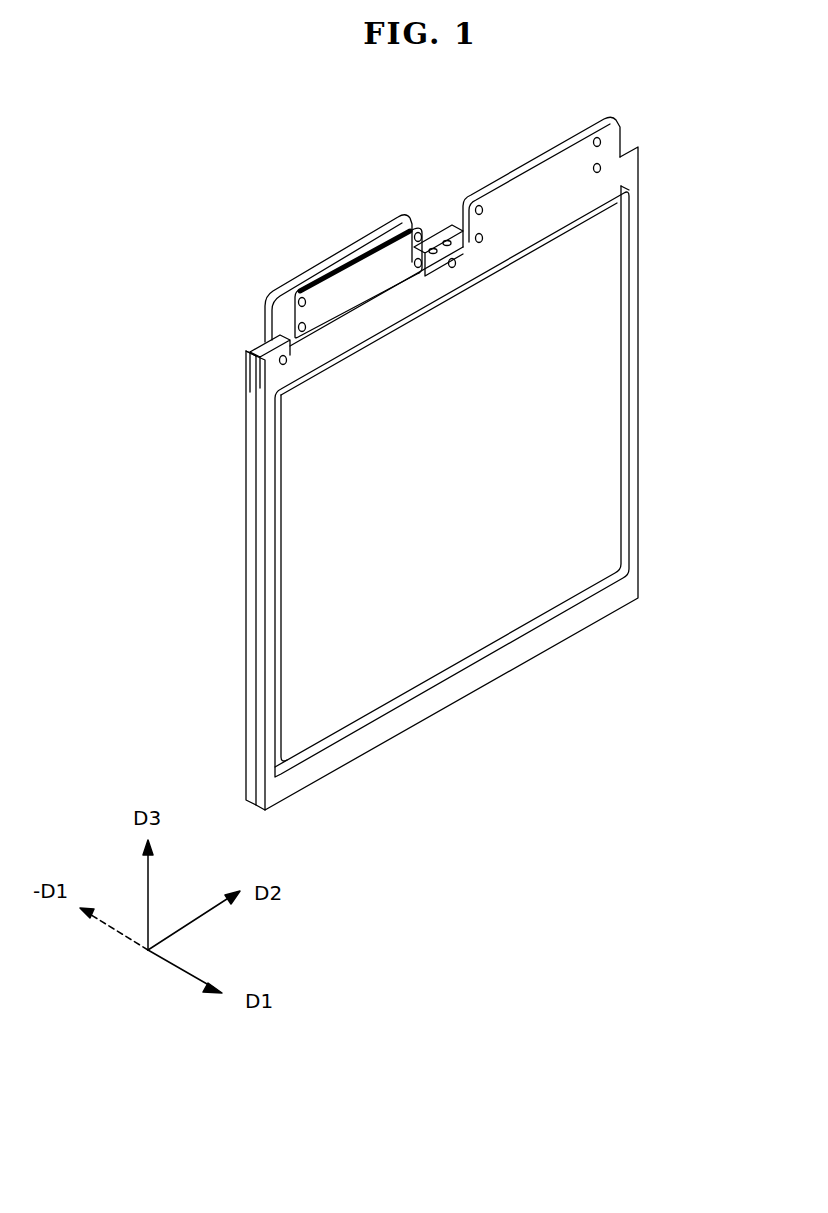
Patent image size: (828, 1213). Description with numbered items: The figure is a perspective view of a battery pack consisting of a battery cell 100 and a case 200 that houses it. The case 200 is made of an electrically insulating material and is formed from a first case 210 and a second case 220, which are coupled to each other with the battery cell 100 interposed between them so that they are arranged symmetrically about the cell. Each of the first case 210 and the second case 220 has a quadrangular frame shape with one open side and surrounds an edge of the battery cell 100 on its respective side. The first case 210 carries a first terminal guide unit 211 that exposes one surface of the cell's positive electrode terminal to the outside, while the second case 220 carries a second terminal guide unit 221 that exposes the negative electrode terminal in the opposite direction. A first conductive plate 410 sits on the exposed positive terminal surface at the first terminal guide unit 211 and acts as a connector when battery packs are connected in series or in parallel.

The battery cell 100 is at (610, 382).
The case 200 is at (166, 497).
The first case 210 is at (251, 508).
The first terminal guide unit 211 is at (274, 292).
The second case 220 is at (261, 546).
The second terminal guide unit 221 is at (618, 141).
The first conductive plate 410 is at (357, 281).